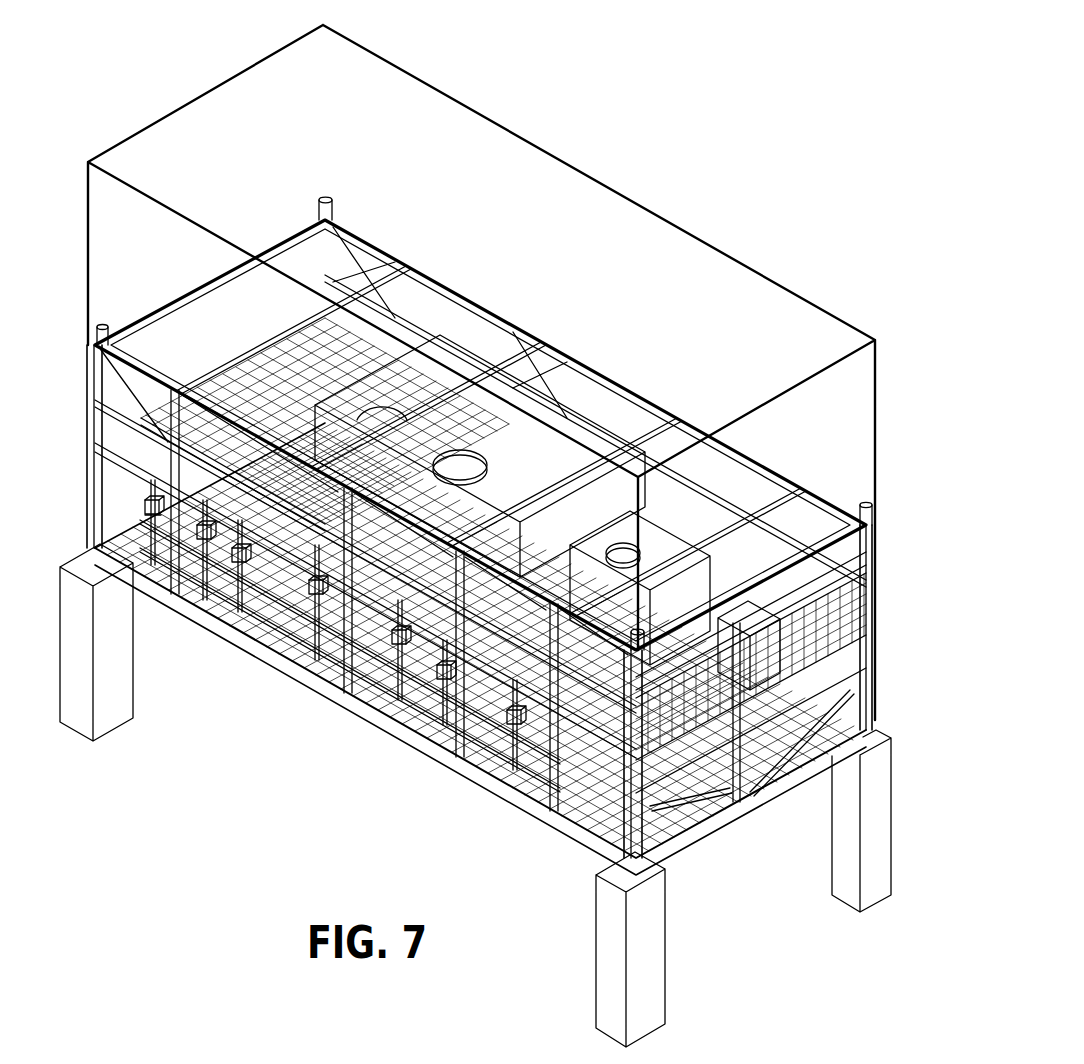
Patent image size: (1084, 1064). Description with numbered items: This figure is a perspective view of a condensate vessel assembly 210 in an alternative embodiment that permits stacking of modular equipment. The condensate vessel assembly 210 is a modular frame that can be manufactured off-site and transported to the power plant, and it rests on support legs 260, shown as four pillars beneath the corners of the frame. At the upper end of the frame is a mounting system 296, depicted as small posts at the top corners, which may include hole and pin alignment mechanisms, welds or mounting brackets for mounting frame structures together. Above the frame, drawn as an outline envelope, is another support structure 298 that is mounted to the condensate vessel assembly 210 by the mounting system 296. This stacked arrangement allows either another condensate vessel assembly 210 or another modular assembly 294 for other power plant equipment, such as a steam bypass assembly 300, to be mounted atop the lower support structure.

The support structure 298 is at (681, 229).
The modular assembly 294 is at (524, 547).
The condensate vessel assembly 210 is at (524, 547).
The steam bypass assembly 300 is at (932, 288).
The mounting system 296 is at (94, 346).
The support legs 260 is at (112, 677).